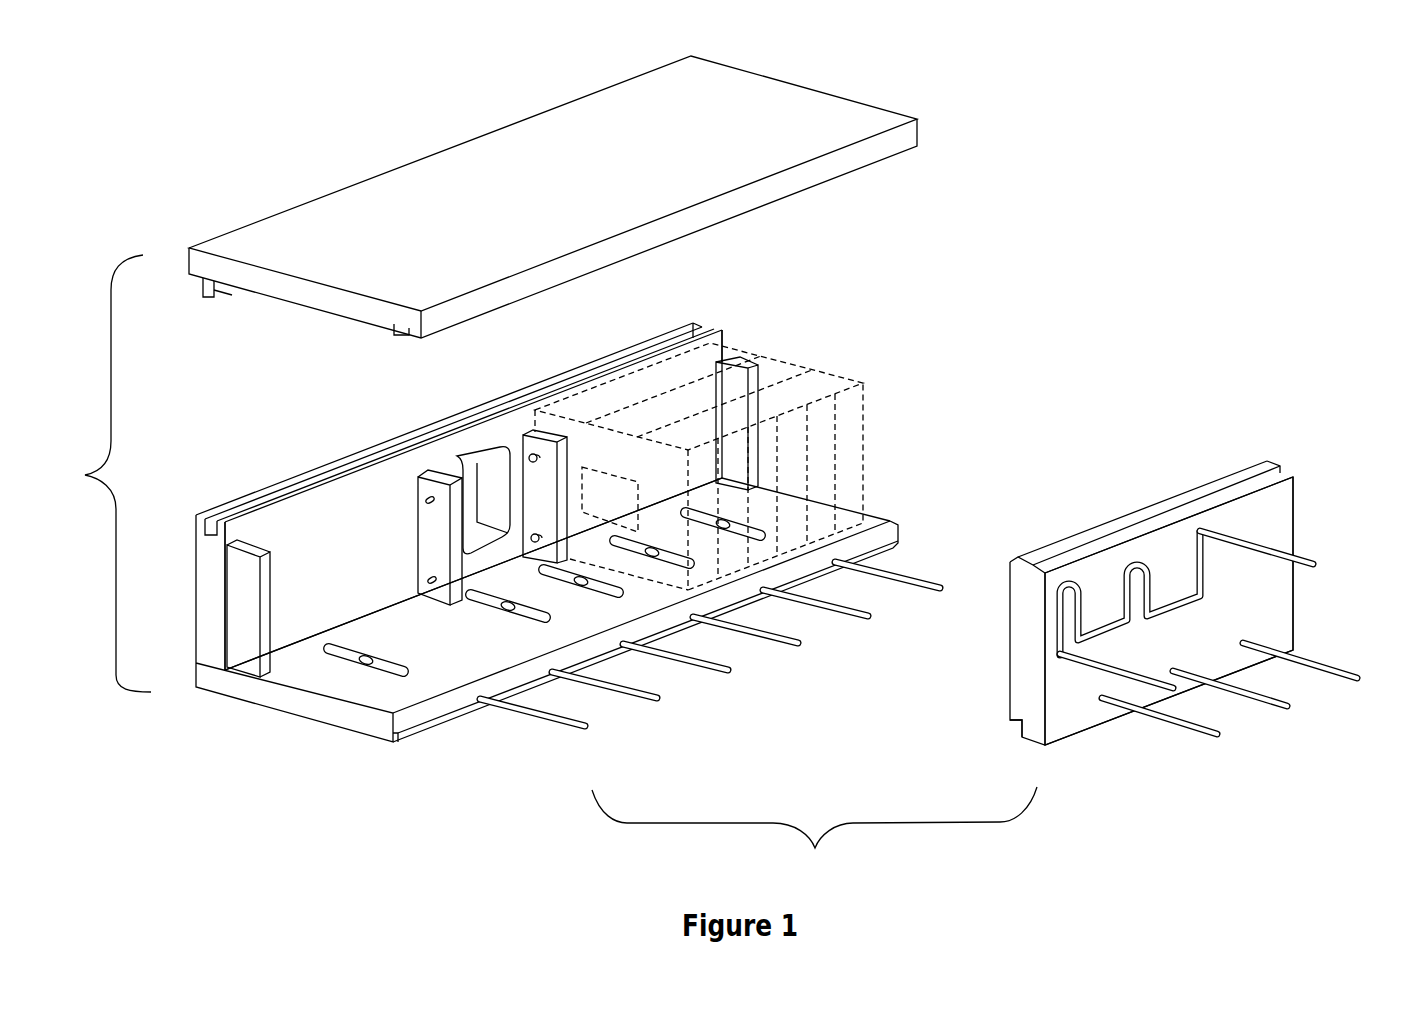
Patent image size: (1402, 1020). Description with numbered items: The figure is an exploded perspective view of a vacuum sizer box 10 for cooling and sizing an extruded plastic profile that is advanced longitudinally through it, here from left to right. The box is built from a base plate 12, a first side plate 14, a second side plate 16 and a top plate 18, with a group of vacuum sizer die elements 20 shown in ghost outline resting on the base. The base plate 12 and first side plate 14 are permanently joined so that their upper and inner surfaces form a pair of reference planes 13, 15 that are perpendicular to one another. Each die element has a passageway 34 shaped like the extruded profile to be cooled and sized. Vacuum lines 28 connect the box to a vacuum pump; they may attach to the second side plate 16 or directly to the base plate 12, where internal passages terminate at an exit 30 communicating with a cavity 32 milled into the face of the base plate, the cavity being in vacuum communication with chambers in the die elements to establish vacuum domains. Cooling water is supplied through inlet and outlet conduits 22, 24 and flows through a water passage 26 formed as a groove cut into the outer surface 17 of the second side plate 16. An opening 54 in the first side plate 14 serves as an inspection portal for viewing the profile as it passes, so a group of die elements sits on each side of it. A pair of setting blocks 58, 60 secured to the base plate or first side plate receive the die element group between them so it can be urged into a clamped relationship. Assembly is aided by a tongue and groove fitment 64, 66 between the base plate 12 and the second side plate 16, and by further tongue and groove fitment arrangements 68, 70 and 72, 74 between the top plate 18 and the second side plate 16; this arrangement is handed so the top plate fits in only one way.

The vacuum sizer box 10 is at (1060, 200).
The base plate 12 is at (547, 649).
The reference plane 13 is at (573, 623).
The first side plate 14 is at (459, 496).
The reference plane 15 is at (320, 545).
The second side plate 16 is at (1160, 590).
The outer surface 17 is at (1231, 611).
The top plate 18 is at (553, 214).
The vacuum sizer die elements 20 is at (593, 412).
The inlet conduit 22 is at (1150, 680).
The outlet conduit 24 is at (1302, 562).
The water passage 26 is at (1070, 583).
The vacuum lines 28 is at (565, 725).
The exit 30 is at (360, 661).
The cavity 32 is at (502, 638).
The passageway 34 is at (617, 490).
The opening 54 is at (470, 470).
The setting block 58 is at (237, 613).
The setting block 60 is at (427, 528).
The tongue and groove fitment 64 is at (420, 723).
The tongue and groove fitment 66 is at (1012, 723).
The tongue and groove fitment 68 is at (204, 298).
The tongue and groove fitment 70 is at (212, 520).
The tongue and groove fitment 72 is at (1192, 492).
The tongue and groove fitment 74 is at (401, 333).